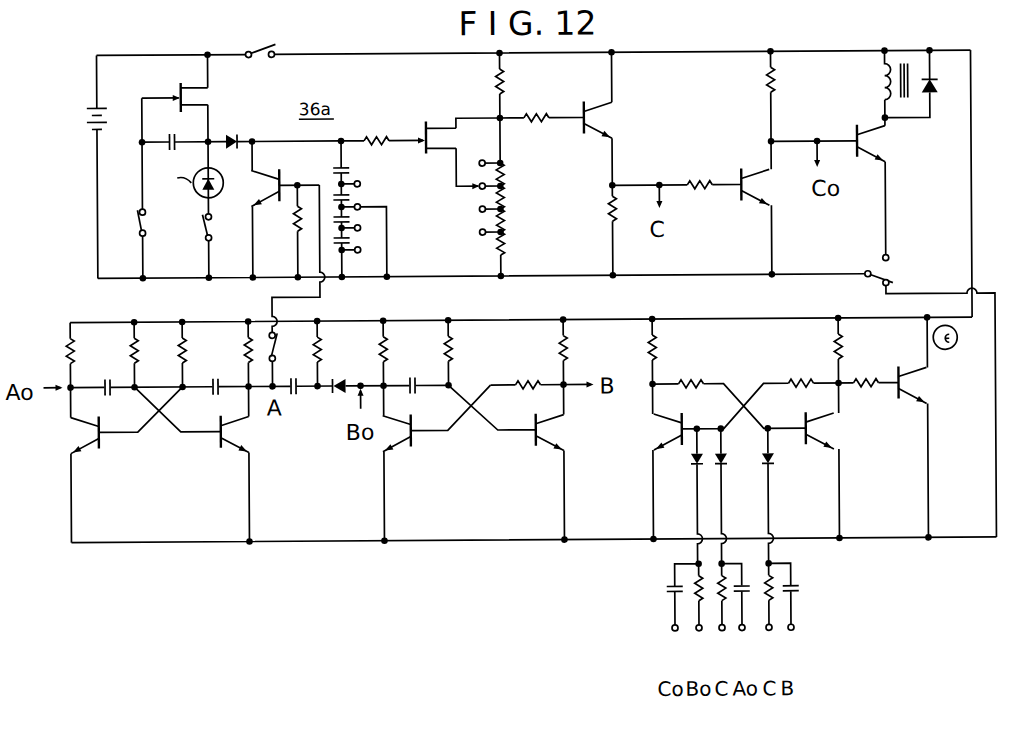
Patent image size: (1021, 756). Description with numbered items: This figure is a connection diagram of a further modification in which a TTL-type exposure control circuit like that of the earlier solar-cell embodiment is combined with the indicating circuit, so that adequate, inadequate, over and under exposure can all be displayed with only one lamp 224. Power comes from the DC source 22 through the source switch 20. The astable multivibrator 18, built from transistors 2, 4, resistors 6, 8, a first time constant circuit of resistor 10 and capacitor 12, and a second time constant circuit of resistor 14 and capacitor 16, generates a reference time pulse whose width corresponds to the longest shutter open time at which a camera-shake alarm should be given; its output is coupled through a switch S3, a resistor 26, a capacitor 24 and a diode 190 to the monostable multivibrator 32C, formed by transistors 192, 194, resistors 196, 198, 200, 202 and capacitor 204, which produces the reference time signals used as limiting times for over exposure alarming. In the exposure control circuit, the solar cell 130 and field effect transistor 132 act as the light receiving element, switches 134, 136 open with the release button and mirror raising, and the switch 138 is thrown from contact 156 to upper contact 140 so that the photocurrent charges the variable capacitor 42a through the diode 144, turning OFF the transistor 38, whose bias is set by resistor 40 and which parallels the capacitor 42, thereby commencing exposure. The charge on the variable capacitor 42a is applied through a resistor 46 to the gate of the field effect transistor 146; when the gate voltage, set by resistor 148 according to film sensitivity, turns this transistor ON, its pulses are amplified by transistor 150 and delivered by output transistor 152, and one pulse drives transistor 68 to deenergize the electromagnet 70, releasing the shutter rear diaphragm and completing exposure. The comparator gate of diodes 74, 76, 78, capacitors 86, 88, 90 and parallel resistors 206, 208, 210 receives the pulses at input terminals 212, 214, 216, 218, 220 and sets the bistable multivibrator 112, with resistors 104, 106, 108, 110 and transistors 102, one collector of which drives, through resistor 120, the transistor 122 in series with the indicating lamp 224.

The transistor 2 is at (90, 454).
The transistor 4 is at (228, 454).
The resistor 6 is at (79, 350).
The resistor 8 is at (240, 350).
The resistor 10 is at (148, 350).
The capacitor 12 is at (107, 379).
The resistor 14 is at (196, 350).
The capacitor 16 is at (223, 379).
The astable multivibrator 18 is at (166, 488).
The source switch 20 is at (260, 41).
The source of DC supply 22 is at (79, 121).
The capacitor 24 is at (295, 375).
The resistor 26 is at (330, 349).
The monostable multivibrator 32C is at (490, 484).
The transistor 38 is at (279, 173).
The resistor 40 is at (296, 212).
The capacitor 42 is at (163, 132).
The variable capacitor 42a is at (348, 172).
The resistor 46 is at (375, 126).
The transistor 68 is at (881, 143).
The electromagnet 70 is at (896, 74).
The diode 74 is at (691, 458).
The diode 76 is at (722, 463).
The diode 78 is at (773, 462).
The capacitor 86 is at (660, 579).
The capacitor 88 is at (745, 597).
The capacitor 90 is at (803, 578).
The transistor 102 is at (674, 423).
The resistor 104 is at (670, 347).
The resistor 106 is at (688, 373).
The resistor 108 is at (801, 372).
The resistor 110 is at (857, 346).
The bistable multivibrator 112 is at (762, 355).
The resistor 120 is at (868, 372).
The transistor 122 is at (928, 384).
The solar cell 130 is at (199, 194).
The field effect transistor 132 is at (175, 90).
The switch 134 is at (200, 213).
The switch 136 is at (124, 224).
The switch 138 is at (888, 281).
The upper contact 140 is at (888, 258).
The diode 144 is at (235, 131).
The field effect transistor 146 is at (459, 140).
The resistor 148 is at (513, 162).
The transistor 150 is at (586, 161).
The output transistor 152 is at (744, 136).
The contact 156 is at (882, 287).
The diode 190 is at (353, 377).
The transistor 192 is at (405, 445).
The transistor 194 is at (543, 445).
The resistor 196 is at (402, 348).
The resistor 198 is at (467, 348).
The resistor 200 is at (531, 374).
The resistor 202 is at (583, 347).
The capacitor 204 is at (421, 376).
The resistor 206 is at (680, 584).
The resistor 208 is at (738, 583).
The resistor 210 is at (785, 583).
The input terminal 212 is at (675, 640).
The input terminal 214 is at (692, 646).
The input terminal 216 is at (723, 640).
The input terminal 218 is at (742, 646).
The input terminal 220 is at (798, 654).
The indicating lamp 224 is at (960, 346).
The switch S3 is at (288, 346).